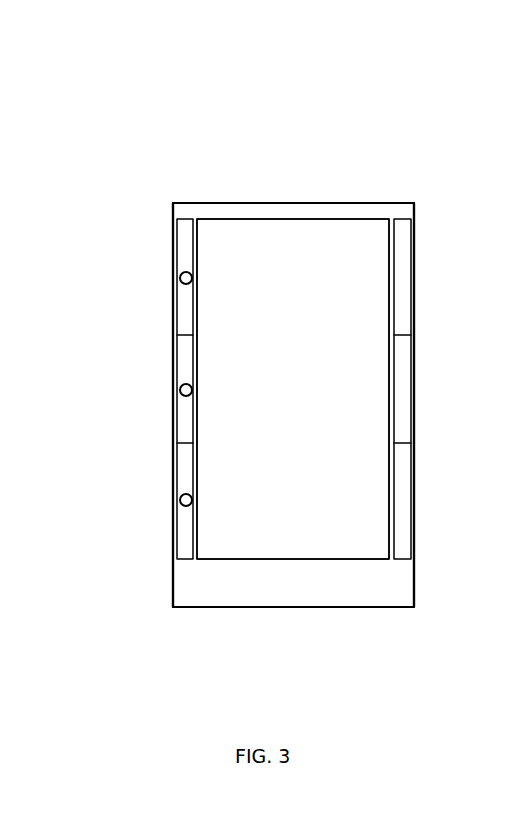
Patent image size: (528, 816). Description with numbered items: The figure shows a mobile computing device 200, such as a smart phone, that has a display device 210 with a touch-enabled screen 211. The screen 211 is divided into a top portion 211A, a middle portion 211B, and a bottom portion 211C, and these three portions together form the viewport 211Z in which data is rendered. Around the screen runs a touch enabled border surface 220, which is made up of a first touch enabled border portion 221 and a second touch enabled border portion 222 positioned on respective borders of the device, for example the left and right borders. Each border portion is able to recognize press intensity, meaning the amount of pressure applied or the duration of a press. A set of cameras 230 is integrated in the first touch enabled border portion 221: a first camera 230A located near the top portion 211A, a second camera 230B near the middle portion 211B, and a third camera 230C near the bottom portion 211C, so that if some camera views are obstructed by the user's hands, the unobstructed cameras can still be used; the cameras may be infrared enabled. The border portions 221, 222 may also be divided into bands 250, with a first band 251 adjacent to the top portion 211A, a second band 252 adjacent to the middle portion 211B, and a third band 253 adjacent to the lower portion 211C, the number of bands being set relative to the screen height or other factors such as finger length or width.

The mobile computing device 200 is at (143, 47).
The touch enabled border surface 220 is at (185, 88).
The display device 210 is at (377, 219).
The screen 211 is at (321, 237).
The viewport 211Z is at (287, 245).
The top portion 211A is at (242, 252).
The middle portion 211B is at (242, 364).
The bottom portion 211C is at (242, 475).
The first touch enabled border portion 221 is at (177, 228).
The second touch enabled border portion 222 is at (414, 220).
The first band 251 is at (182, 313).
The second band 252 is at (182, 425).
The third band 253 is at (182, 540).
The set of cameras 230 is at (184, 655).
The first camera 230A is at (180, 278).
The second camera 230B is at (180, 390).
The third camera 230C is at (180, 500).
The bands 250 is at (181, 622).